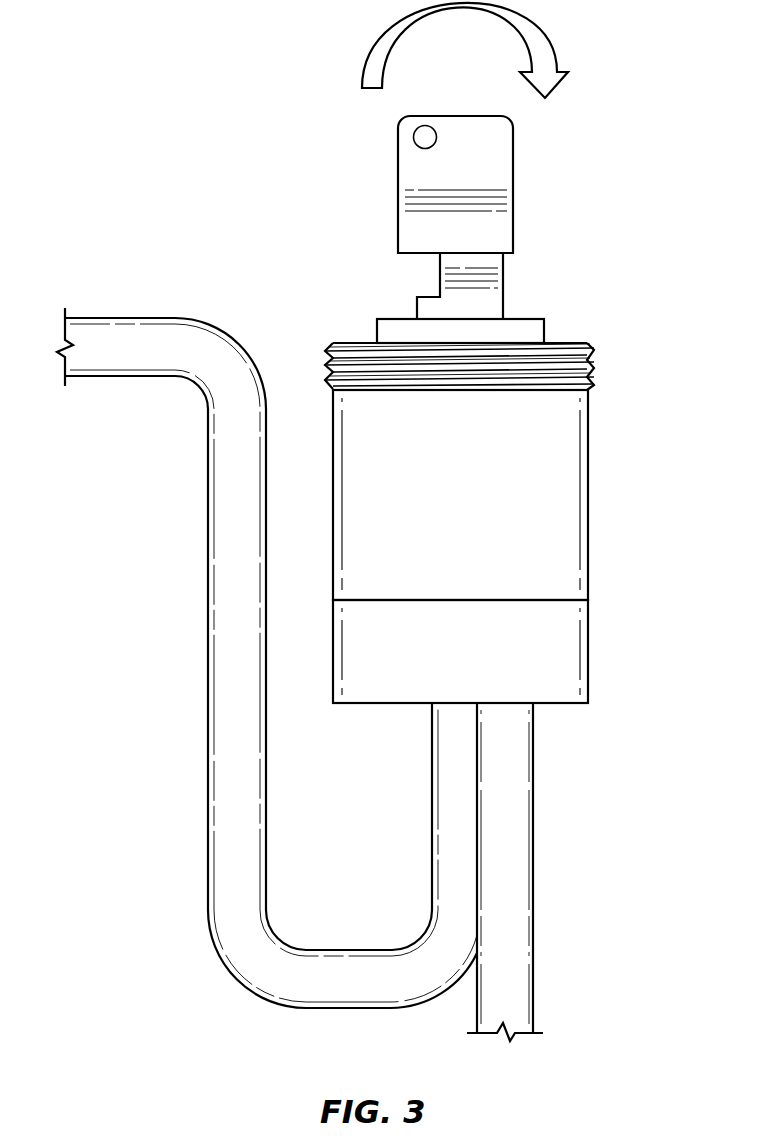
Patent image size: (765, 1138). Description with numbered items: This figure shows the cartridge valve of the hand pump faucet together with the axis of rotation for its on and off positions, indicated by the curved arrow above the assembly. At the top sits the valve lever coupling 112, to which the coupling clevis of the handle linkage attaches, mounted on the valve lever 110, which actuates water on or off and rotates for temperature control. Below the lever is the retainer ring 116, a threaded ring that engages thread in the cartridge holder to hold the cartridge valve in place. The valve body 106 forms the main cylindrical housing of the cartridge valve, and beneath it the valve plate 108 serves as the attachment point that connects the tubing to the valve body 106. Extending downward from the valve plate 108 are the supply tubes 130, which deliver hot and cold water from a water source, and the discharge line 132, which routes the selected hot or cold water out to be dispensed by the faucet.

The valve body 106 is at (588, 495).
The valve plate 108 is at (588, 647).
The valve lever 110 is at (503, 283).
The valve lever coupling 112 is at (513, 190).
The retainer ring 116 is at (594, 352).
The supply tubes 130 is at (533, 858).
The discharge line 132 is at (208, 633).